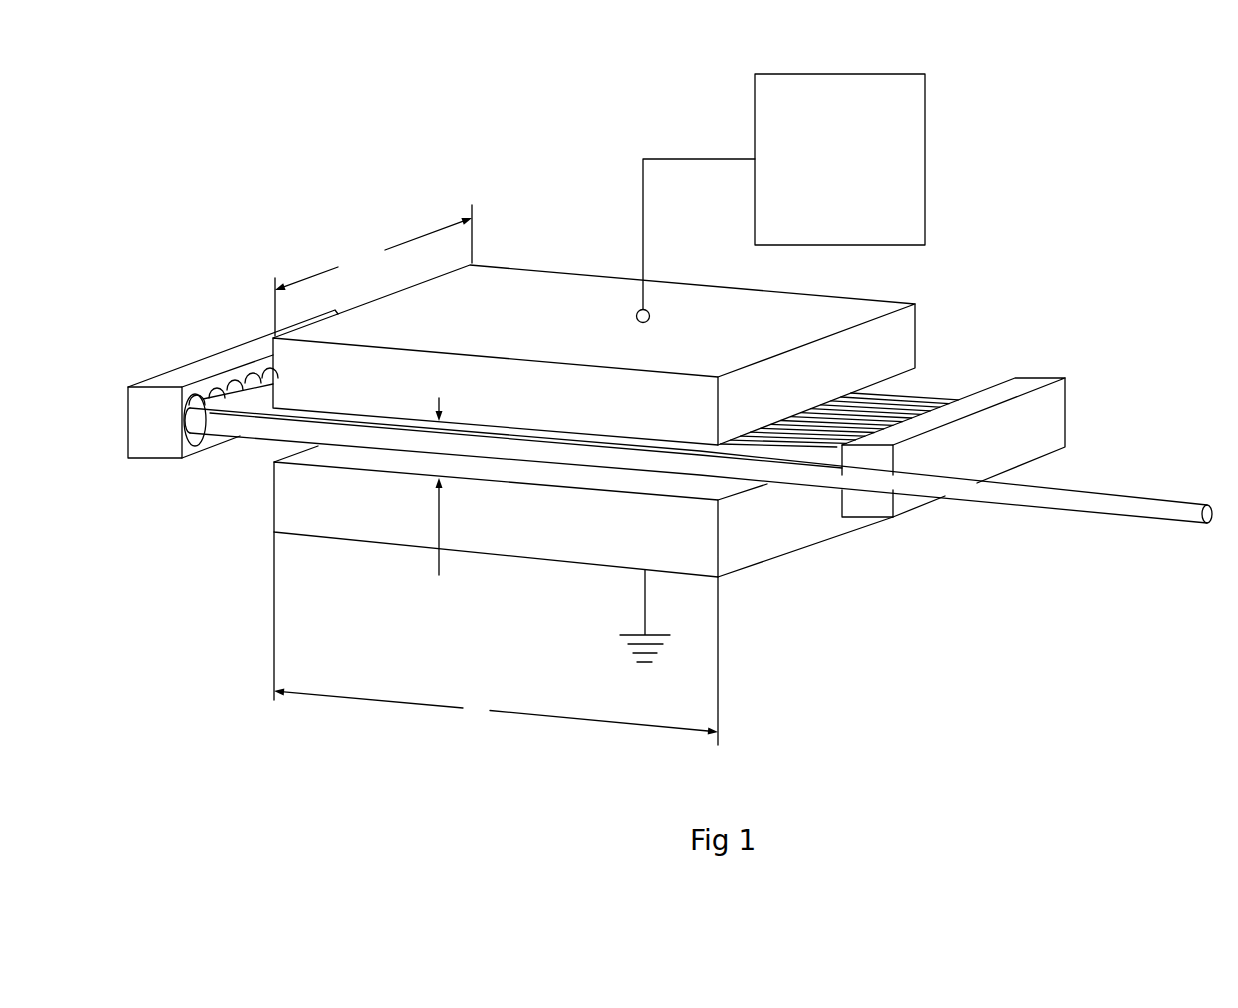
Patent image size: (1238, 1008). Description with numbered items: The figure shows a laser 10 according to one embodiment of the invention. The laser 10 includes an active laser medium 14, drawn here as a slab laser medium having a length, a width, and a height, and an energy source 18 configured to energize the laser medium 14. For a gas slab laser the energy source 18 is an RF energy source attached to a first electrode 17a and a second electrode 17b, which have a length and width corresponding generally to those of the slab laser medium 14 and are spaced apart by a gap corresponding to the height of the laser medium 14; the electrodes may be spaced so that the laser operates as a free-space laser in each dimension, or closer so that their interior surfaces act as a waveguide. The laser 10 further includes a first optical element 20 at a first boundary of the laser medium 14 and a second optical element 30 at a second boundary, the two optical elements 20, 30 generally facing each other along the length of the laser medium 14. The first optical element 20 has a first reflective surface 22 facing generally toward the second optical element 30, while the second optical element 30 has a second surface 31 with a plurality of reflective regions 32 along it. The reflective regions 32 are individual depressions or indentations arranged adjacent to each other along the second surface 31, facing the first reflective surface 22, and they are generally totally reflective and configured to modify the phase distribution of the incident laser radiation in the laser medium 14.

The laser 10 is at (556, 221).
The active laser medium 14 is at (325, 453).
The first electrode 17a is at (893, 345).
The second electrode 17b is at (762, 530).
The energy source 18 is at (900, 99).
The first optical element 20 is at (1032, 448).
The first reflective surface 22 is at (985, 381).
The second optical element 30 is at (217, 365).
The second surface 31 is at (245, 368).
The reflective regions 32 is at (192, 402).